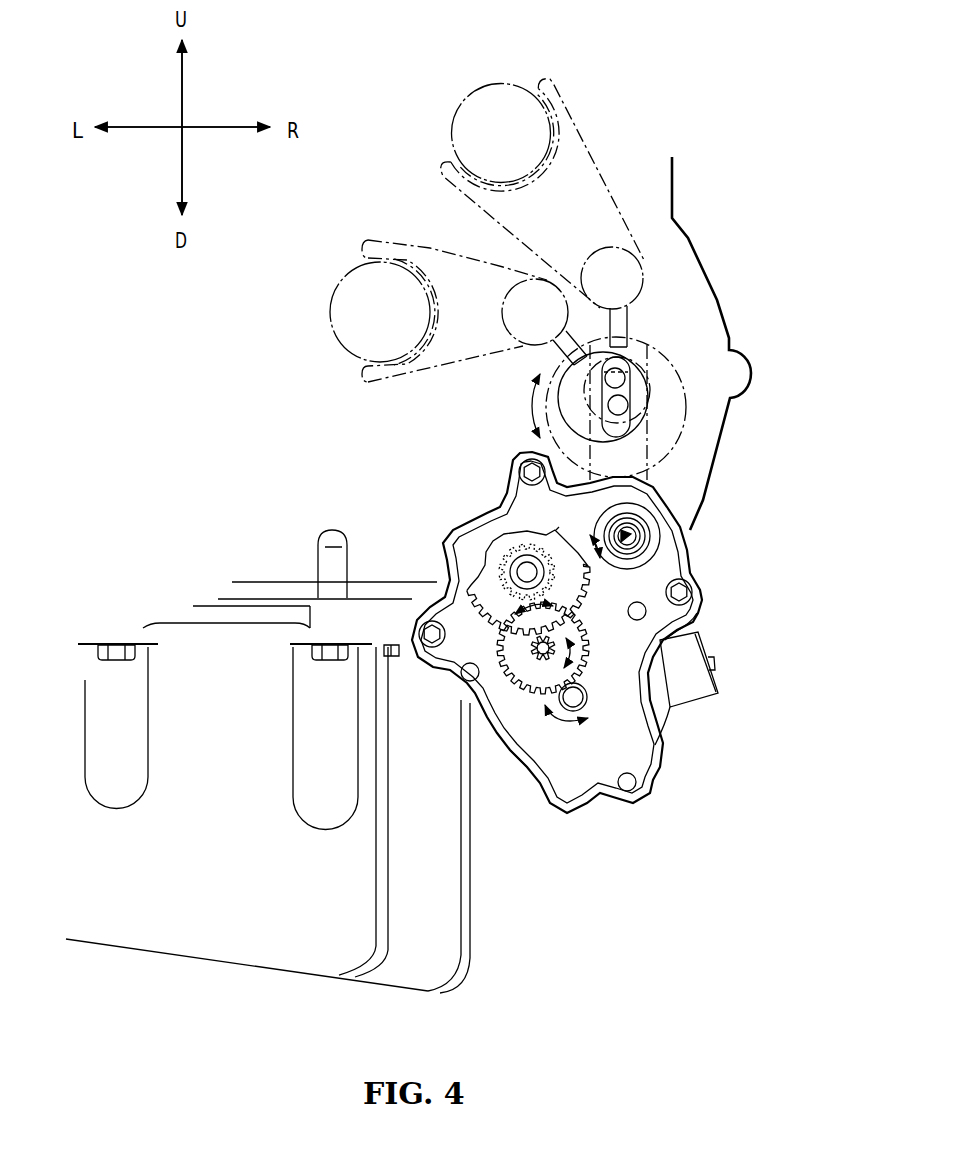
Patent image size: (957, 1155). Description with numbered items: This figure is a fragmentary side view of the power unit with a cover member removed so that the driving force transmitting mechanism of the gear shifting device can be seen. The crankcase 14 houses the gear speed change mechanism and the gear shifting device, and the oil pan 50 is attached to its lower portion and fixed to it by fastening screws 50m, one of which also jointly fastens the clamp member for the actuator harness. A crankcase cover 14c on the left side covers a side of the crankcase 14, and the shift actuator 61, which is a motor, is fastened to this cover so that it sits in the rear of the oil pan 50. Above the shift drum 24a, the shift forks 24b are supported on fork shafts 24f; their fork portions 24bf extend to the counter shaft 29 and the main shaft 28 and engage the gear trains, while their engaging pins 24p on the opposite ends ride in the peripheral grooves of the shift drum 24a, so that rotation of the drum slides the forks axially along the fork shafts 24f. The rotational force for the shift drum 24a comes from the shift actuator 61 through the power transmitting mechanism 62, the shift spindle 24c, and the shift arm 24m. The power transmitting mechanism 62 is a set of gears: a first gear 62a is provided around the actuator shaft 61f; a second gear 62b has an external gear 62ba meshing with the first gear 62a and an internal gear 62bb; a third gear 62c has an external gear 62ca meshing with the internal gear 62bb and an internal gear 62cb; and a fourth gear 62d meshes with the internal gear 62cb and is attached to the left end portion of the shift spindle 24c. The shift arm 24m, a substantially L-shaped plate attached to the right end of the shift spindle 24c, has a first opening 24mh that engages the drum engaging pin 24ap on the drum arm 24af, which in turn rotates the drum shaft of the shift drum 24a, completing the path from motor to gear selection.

The crankcase 14 is at (690, 239).
The crankcase cover 14c is at (519, 469).
The shift drum 24a is at (640, 360).
The drum arm 24af is at (632, 372).
The drum engaging pin 24ap is at (620, 378).
The shift fork 24b is at (457, 253).
The fork portion 24bf is at (429, 246).
The shift spindle 24c is at (637, 536).
The fork shaft 24f is at (520, 323).
The shift arm 24m is at (656, 475).
The first opening 24mh is at (622, 407).
The engaging pin 24p is at (552, 360).
The main shaft 28 is at (352, 276).
The counter shaft 29 is at (468, 89).
The oil pan 50 is at (276, 972).
The fastening screw 50m is at (115, 660).
The shift actuator 61 is at (672, 738).
The actuator shaft 61f is at (652, 680).
The power transmitting mechanism 62 is at (640, 832).
The first gear 62a is at (588, 705).
The second gear 62b is at (588, 668).
The external gear 62ba is at (522, 695).
The internal gear 62bb is at (470, 752).
The third gear 62c is at (493, 612).
The external gear 62ca is at (385, 652).
The internal gear 62cb is at (500, 553).
The fourth gear 62d is at (527, 555).